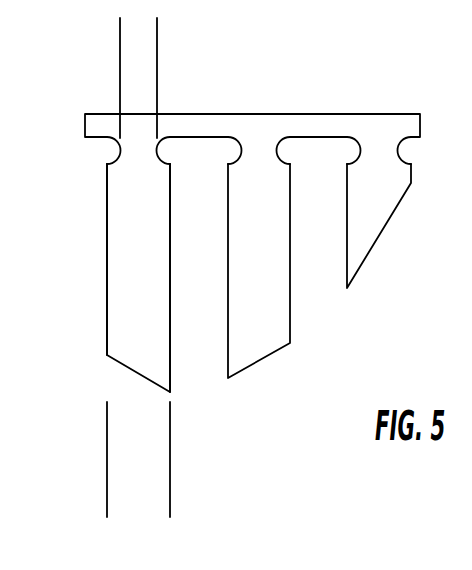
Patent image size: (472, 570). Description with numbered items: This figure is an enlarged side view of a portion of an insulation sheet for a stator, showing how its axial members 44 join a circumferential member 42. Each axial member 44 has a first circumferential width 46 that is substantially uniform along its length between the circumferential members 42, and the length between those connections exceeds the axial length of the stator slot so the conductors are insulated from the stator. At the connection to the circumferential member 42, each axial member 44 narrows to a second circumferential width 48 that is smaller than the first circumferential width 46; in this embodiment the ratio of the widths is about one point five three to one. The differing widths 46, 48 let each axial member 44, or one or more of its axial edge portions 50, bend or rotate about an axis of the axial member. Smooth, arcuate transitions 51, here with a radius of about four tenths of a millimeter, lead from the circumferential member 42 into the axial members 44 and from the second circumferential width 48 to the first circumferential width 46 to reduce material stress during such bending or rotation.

The circumferential member 42 is at (195, 124).
The axial member 44 is at (132, 266).
The first circumferential width 46 is at (170, 465).
The second circumferential width 48 is at (200, 40).
The axial edge portion 50 is at (112, 210).
The arcuate transition 51 is at (302, 252).